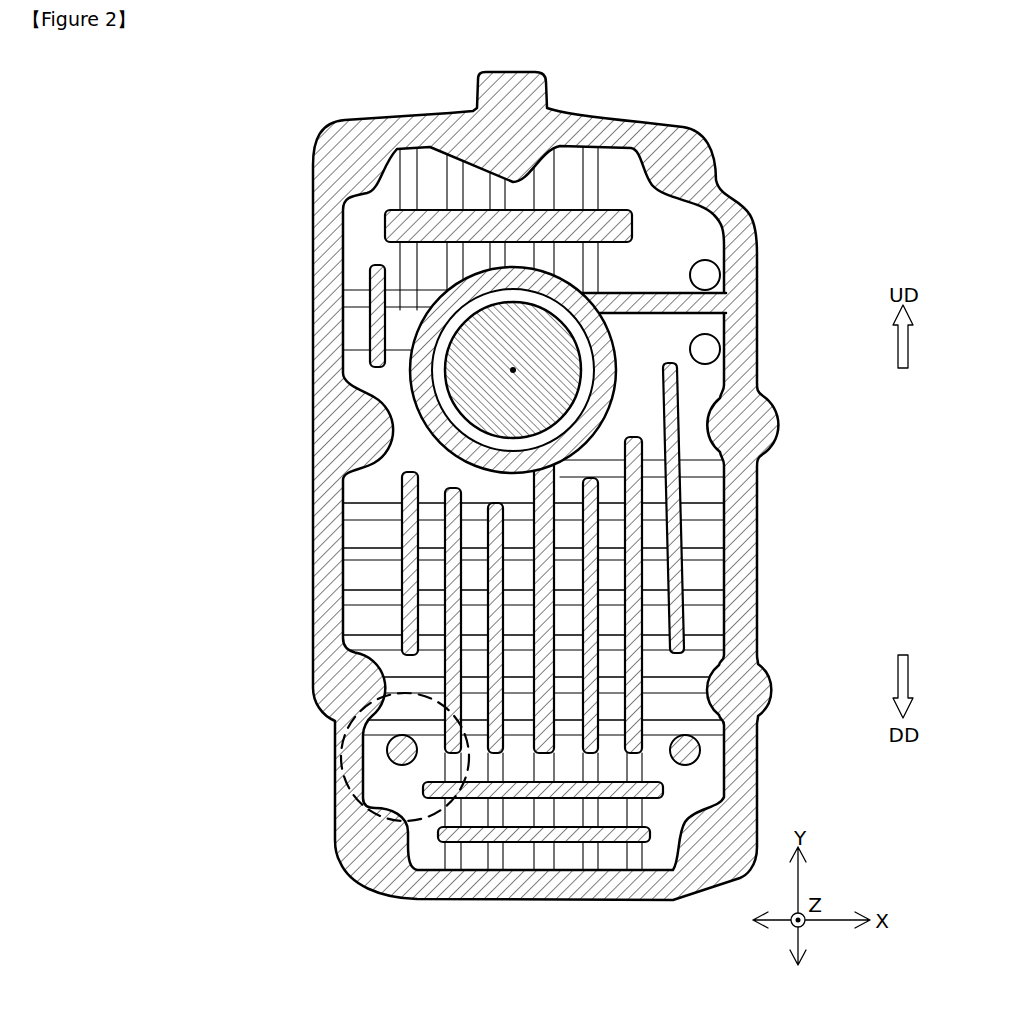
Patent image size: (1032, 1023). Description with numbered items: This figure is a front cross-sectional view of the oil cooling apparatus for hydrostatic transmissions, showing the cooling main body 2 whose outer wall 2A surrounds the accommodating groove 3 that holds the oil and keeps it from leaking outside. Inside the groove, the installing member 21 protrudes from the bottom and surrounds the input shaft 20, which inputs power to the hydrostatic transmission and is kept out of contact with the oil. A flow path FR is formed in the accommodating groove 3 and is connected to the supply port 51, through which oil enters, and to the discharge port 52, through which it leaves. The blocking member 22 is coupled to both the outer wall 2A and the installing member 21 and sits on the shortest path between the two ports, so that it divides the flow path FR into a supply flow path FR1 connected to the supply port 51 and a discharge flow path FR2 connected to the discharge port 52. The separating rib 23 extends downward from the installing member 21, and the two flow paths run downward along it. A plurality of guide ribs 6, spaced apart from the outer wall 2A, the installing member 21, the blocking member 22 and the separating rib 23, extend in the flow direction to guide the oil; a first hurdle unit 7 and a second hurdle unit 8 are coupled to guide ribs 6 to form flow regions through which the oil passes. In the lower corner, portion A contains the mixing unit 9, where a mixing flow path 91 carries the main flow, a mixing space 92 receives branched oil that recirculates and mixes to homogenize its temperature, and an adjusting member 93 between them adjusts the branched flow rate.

The cooling main body 2 is at (838, 163).
The outer wall 2A is at (685, 167).
The input shaft 20 is at (530, 340).
The installing member 21 is at (600, 397).
The blocking member 22 is at (683, 330).
The separating rib 23 is at (548, 532).
The accommodating groove 3 is at (174, 499).
The flow path FR is at (228, 421).
The supply flow path FR1 is at (406, 435).
The discharge flow path FR2 is at (677, 722).
The supply port 51 is at (706, 283).
The discharge port 52 is at (706, 357).
The guide ribs 6 is at (433, 225).
The first hurdle unit 7 is at (493, 250).
The second hurdle unit 8 is at (400, 297).
The mixing unit 9 is at (432, 948).
The mixing flow path 91 is at (439, 750).
The mixing space 92 is at (360, 825).
The adjusting member 93 is at (405, 755).
The portion A is at (347, 786).